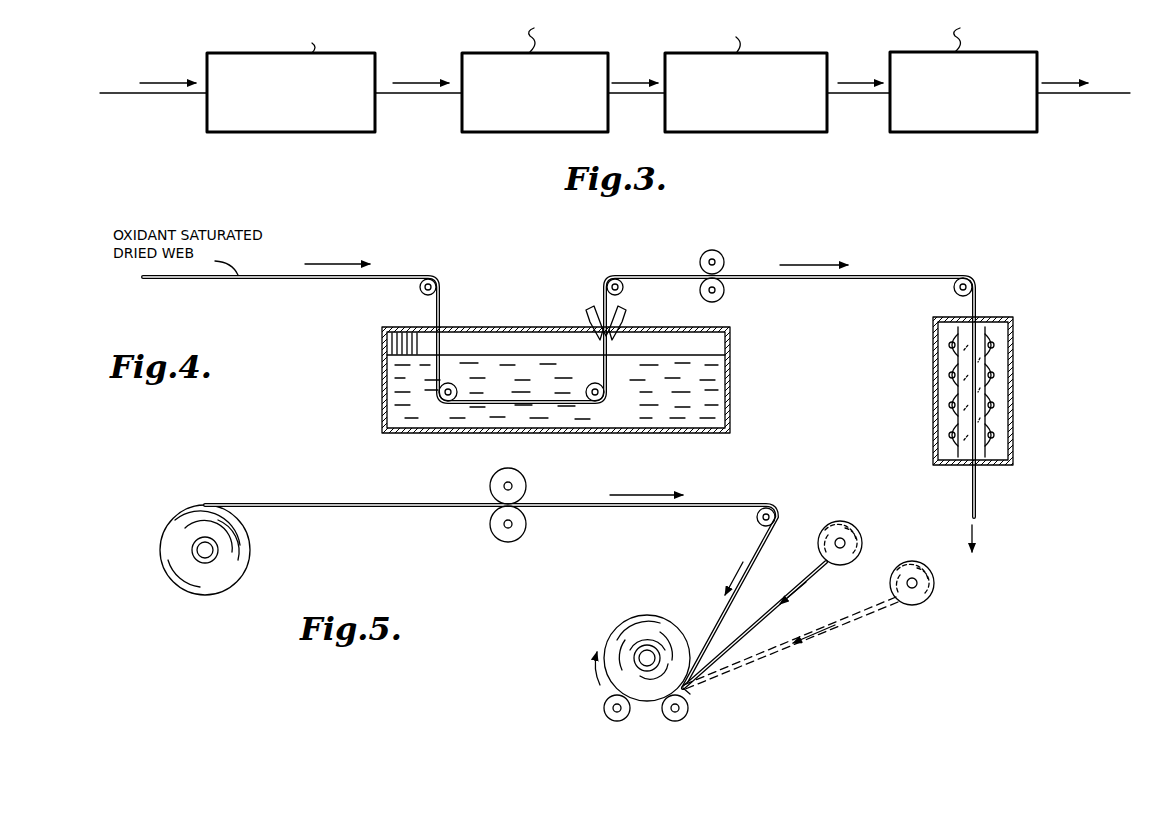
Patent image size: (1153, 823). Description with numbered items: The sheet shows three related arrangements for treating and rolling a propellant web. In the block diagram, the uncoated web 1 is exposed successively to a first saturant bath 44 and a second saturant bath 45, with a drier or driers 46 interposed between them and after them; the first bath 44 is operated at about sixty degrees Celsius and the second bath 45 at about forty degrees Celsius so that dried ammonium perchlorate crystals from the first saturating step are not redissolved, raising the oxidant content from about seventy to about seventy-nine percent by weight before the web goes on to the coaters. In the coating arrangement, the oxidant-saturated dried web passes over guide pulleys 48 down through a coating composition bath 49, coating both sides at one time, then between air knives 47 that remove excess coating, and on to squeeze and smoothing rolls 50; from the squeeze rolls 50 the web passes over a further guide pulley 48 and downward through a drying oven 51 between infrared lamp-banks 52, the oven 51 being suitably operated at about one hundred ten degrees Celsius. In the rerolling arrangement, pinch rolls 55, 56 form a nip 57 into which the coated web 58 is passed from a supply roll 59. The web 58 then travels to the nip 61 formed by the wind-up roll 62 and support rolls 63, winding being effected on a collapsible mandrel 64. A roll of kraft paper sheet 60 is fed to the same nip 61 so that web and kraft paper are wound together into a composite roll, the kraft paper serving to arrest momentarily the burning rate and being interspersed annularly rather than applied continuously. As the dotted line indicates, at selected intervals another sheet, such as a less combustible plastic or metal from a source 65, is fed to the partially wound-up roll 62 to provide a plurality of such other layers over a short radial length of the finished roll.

In FIG. 3, the web 1 is at (122, 88).
In FIG. 3, the first saturant bath 44 is at (298, 132).
In FIG. 3, the second saturant bath 45 is at (758, 132).
In FIG. 3, the drier 46 is at (508, 132).
In FIG. 4, the air knives 47 is at (590, 312).
In FIG. 4, the guide pulleys 48 is at (433, 280).
In FIG. 4, the coating composition bath 49 is at (395, 387).
In FIG. 4, the squeeze rolls 50 is at (724, 293).
In FIG. 4, the drying oven 51 is at (933, 389).
In FIG. 4, the infrared lamp-banks 52 is at (992, 405).
In FIG. 5, the pinch roll 55 is at (490, 483).
In FIG. 5, the pinch roll 56 is at (520, 532).
In FIG. 5, the nip 57 is at (525, 496).
In FIG. 5, the coated web 58 is at (390, 503).
In FIG. 5, the roll 59 is at (172, 556).
In FIG. 5, the roll of kraft paper sheet 60 is at (860, 535).
In FIG. 5, the nip 61 is at (698, 697).
In FIG. 5, the wind-up roll 62 is at (626, 627).
In FIG. 5, the support rolls 63 is at (668, 715).
In FIG. 5, the collapsible mandrel 64 is at (651, 652).
In FIG. 5, the source 65 is at (932, 590).